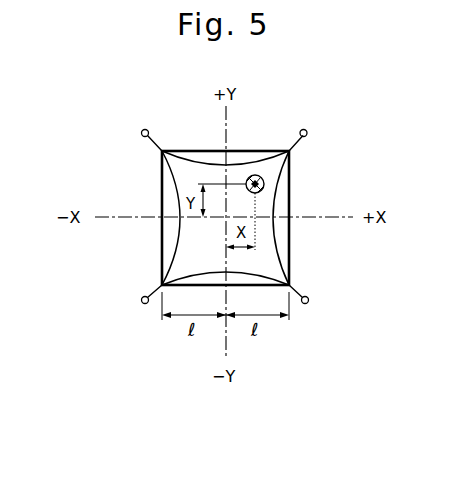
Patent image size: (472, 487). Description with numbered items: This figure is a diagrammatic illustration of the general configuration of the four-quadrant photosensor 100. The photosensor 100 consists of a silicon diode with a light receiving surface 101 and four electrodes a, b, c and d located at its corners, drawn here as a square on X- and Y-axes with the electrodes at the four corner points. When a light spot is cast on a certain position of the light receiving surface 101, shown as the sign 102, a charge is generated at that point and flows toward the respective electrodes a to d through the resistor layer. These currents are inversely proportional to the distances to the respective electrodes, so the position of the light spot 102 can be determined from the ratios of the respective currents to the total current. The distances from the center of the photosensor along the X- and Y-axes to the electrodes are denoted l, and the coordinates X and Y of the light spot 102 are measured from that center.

The photosensor 100 is at (152, 256).
The light receiving surface 101 is at (266, 264).
The light spot 102 is at (262, 178).